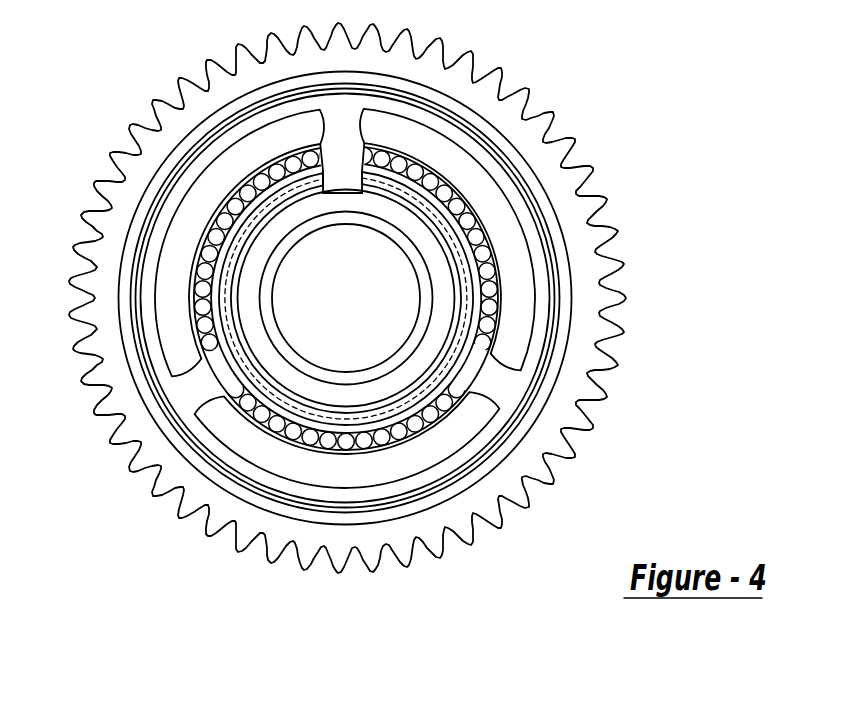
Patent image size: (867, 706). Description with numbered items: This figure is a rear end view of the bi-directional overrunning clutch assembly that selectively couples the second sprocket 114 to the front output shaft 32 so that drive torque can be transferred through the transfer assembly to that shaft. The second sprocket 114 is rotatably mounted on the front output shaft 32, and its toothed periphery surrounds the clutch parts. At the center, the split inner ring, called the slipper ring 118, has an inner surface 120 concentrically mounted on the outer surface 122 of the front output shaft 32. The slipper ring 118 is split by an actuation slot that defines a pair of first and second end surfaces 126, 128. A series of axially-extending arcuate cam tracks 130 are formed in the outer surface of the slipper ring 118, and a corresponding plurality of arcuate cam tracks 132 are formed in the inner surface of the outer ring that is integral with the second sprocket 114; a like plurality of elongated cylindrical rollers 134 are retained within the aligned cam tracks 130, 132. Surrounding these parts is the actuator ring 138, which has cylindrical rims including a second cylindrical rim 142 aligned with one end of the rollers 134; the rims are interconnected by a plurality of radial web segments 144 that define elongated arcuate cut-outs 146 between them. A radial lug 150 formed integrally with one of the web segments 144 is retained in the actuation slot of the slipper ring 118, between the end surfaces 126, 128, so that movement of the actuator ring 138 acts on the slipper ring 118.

The second sprocket 114 is at (612, 264).
The radial lug 150 is at (343, 167).
The elongated arcuate cut-outs 146 is at (482, 150).
The actuator ring 138 is at (512, 382).
The outer surface of front output shaft 122 is at (247, 357).
The radial web segments 144 is at (346, 116).
The first end surface 126 is at (325, 194).
The elongated cylindrical rollers 134 is at (474, 227).
The arcuate cam tracks of outer ring 132 is at (490, 248).
The arcuate cam tracks of slipper ring 130 is at (205, 280).
The second end surface 128 is at (364, 190).
The inner surface of inner ring 120 is at (282, 192).
The slipper ring 118 is at (455, 263).
The front output shaft 32 is at (357, 365).
The second cylindrical rim 142 is at (428, 400).